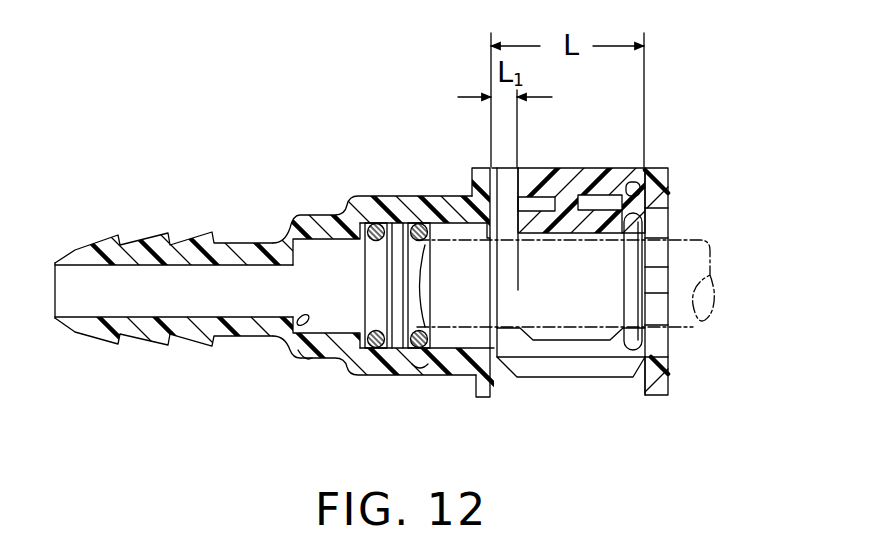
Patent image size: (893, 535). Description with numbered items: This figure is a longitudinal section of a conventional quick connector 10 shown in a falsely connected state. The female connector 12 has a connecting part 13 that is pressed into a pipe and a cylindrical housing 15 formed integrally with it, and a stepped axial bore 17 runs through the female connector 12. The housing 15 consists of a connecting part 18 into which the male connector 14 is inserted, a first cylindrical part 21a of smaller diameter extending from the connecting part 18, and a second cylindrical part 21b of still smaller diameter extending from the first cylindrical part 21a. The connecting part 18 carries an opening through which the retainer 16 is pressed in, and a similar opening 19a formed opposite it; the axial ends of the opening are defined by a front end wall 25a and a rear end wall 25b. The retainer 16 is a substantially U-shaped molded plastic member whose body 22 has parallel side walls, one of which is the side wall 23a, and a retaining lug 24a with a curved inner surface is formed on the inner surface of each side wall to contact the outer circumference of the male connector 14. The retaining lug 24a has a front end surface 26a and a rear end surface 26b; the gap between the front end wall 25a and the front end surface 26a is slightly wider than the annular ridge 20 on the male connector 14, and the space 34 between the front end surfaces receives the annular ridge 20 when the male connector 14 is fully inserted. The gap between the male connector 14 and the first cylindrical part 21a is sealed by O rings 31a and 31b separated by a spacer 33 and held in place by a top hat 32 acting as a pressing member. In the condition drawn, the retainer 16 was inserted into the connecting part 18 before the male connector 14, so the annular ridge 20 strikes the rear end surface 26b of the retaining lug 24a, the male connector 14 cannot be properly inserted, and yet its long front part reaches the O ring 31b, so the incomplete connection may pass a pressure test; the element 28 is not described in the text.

The quick connector 10 is at (690, 60).
The female connector 12 is at (308, 117).
The connecting part 13 is at (176, 243).
The male connector 14 is at (690, 322).
The cylindrical housing 15 is at (357, 193).
The retainer 16 is at (647, 120).
The stepped axial bore 17 is at (245, 294).
The connecting part 18 is at (663, 382).
The opening 19a is at (537, 387).
The annular ridge 20 is at (633, 282).
The first cylindrical part 21a is at (418, 367).
The second cylindrical part 21b is at (302, 356).
The body 22 is at (622, 192).
The side wall 23a is at (567, 368).
The retaining lug 24a is at (610, 232).
The front end wall 25a is at (473, 178).
The rear end wall 25b is at (623, 193).
The front end surface 26a is at (538, 167).
The rear end surface 26b is at (617, 167).
The stop ring 28 is at (299, 324).
The O ring 31a is at (365, 343).
The O ring 31b is at (416, 343).
The top hat 32 is at (423, 197).
The spacer 33 is at (399, 346).
The space 34 is at (508, 167).